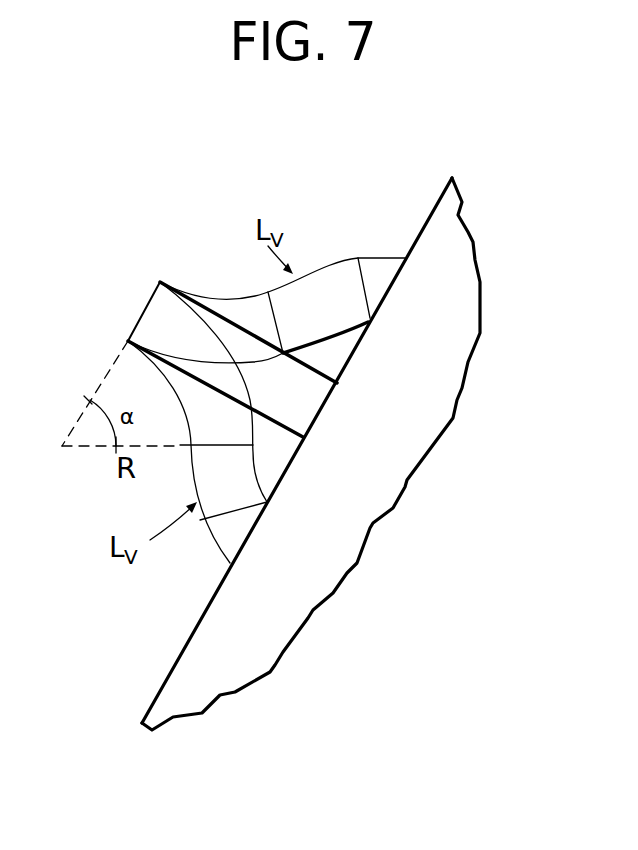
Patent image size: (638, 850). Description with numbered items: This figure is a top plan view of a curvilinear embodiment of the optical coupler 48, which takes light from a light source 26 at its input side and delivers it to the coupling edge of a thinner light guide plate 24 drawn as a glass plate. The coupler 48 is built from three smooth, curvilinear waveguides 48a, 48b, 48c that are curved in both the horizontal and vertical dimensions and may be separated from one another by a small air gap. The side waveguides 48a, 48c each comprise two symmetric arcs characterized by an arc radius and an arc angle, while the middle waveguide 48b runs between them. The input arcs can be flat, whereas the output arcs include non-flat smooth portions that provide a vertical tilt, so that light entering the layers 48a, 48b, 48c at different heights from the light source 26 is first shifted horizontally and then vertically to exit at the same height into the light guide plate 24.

The light guide plate 24 is at (463, 390).
The light source 26 is at (120, 318).
The coupler 48 is at (213, 240).
The side waveguide 48a is at (352, 257).
The curved waveguide 48b is at (313, 368).
The side waveguide 48c is at (217, 543).